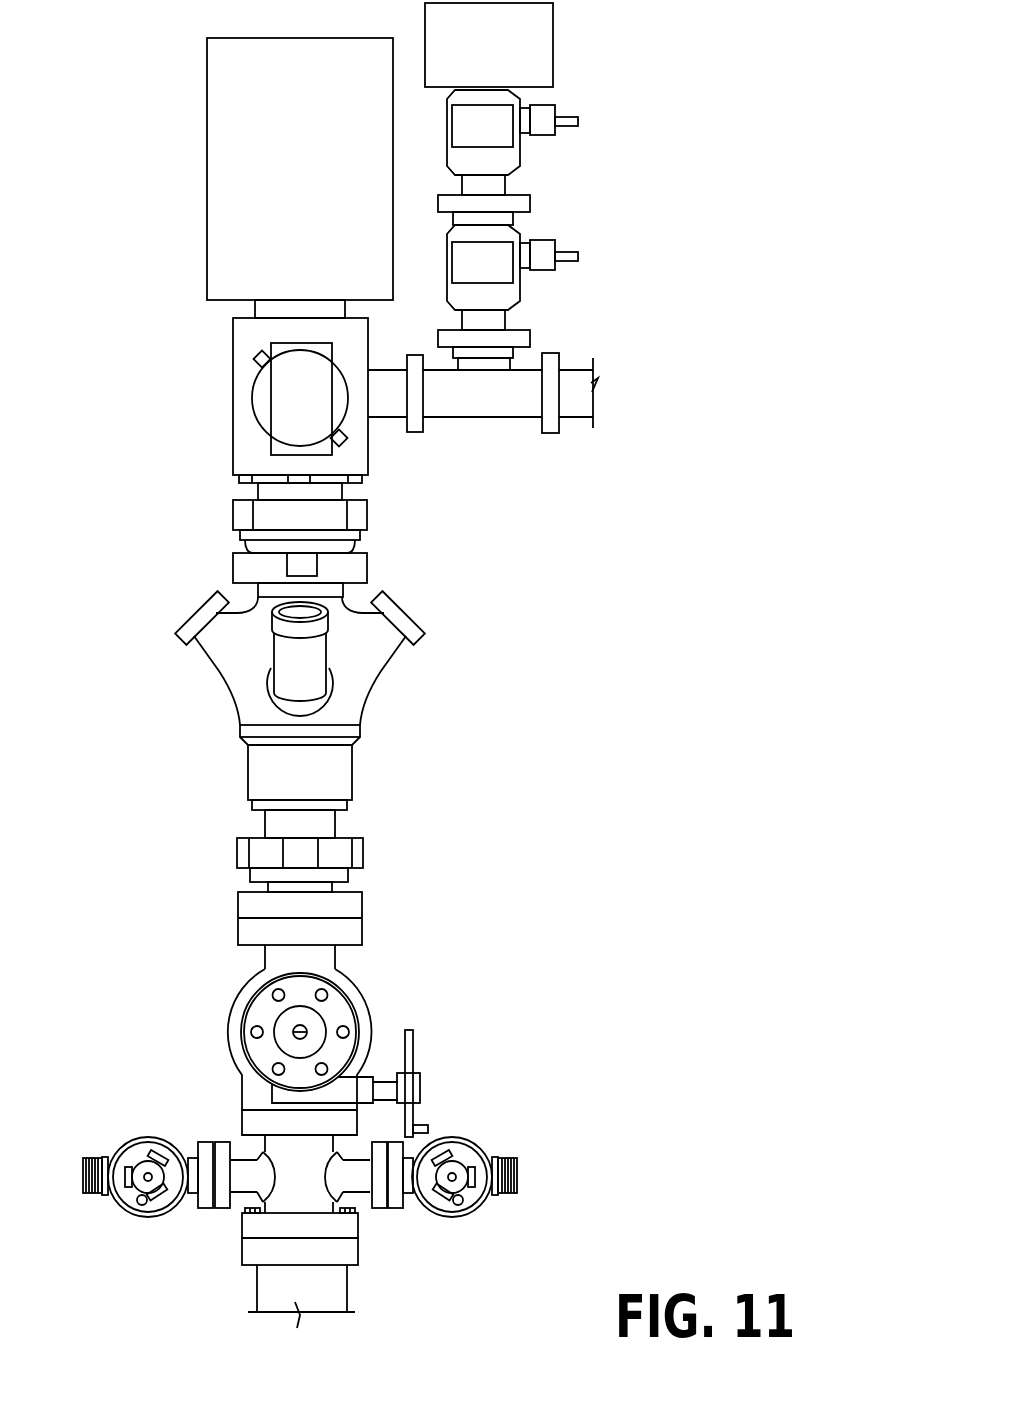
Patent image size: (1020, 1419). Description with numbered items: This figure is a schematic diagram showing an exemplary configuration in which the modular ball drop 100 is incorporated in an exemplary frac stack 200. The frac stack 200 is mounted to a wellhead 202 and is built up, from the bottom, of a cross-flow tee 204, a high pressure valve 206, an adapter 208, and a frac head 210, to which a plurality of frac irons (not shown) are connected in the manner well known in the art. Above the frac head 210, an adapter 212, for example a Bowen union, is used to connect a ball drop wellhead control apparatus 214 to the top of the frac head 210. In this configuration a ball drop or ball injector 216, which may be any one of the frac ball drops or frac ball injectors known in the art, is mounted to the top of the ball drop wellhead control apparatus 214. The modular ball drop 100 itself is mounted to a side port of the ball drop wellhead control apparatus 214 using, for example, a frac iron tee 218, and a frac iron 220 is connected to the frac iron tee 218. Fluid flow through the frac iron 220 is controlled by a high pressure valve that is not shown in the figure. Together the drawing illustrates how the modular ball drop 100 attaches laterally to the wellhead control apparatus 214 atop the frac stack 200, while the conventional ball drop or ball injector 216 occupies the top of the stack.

The modular ball drop 100 is at (594, 56).
The frac stack 200 is at (636, 792).
The wellhead 202 is at (347, 1287).
The cross-flow tee 204 is at (490, 1157).
The high pressure valve 206 is at (370, 1015).
The adapter 208 is at (362, 907).
The frac head 210 is at (368, 657).
The adapter 212 is at (367, 567).
The ball drop wellhead control apparatus 214 is at (368, 465).
The ball drop or ball injector 216 is at (207, 110).
The frac iron tee 218 is at (518, 408).
The frac iron 220 is at (577, 375).